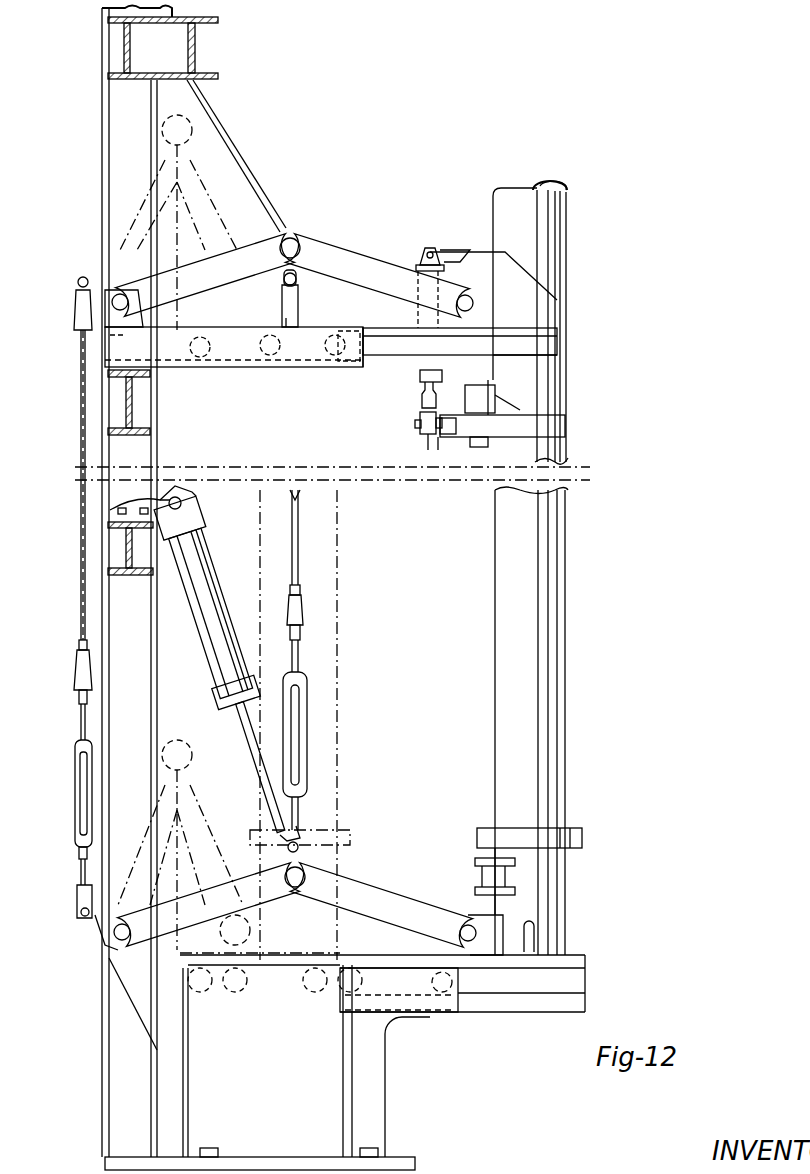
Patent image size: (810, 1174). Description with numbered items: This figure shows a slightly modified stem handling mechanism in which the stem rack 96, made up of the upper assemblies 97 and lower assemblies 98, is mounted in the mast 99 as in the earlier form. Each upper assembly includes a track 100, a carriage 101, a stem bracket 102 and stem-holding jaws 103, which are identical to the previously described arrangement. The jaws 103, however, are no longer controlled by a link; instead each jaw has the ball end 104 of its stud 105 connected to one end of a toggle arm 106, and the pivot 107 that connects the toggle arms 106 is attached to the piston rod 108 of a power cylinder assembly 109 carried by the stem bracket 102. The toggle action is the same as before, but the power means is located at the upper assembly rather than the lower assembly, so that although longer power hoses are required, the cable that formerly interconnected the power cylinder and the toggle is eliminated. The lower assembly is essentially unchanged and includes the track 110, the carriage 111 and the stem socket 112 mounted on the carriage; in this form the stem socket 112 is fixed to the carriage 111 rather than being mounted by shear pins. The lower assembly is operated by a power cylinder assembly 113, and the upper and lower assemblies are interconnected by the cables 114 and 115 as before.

The stem rack 96 is at (568, 335).
The upper assemblies 97 is at (350, 242).
The lower assemblies 98 is at (383, 892).
The mast 99 is at (102, 153).
The track 100 is at (236, 360).
The carriage 101 is at (372, 358).
The stem bracket 102 is at (540, 298).
The stem-holding jaws 103 is at (548, 427).
The ball end 104 is at (425, 450).
The stud 105 is at (440, 437).
The toggle arm 106 is at (418, 420).
The pivot 107 is at (425, 435).
The piston rod 108 is at (425, 400).
The power cylinder assembly 109 is at (435, 376).
The track 110 is at (425, 1020).
The carriage 111 is at (585, 976).
The stem socket 112 is at (575, 882).
The power cylinder assembly 113 is at (232, 607).
The cable 114 is at (83, 621).
The cable 115 is at (300, 556).